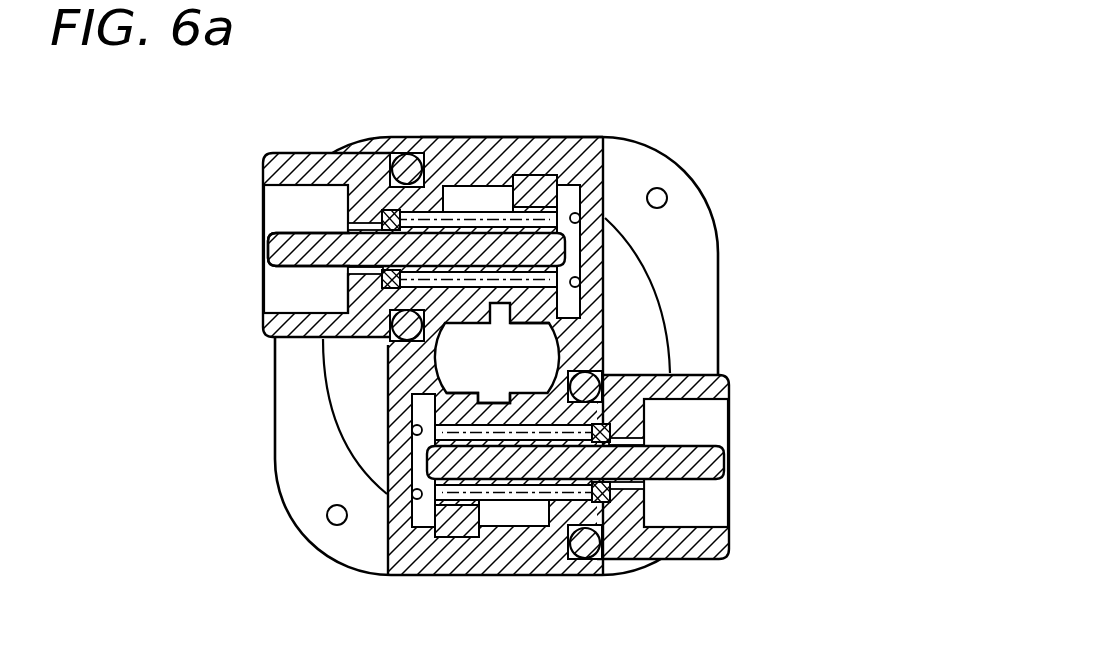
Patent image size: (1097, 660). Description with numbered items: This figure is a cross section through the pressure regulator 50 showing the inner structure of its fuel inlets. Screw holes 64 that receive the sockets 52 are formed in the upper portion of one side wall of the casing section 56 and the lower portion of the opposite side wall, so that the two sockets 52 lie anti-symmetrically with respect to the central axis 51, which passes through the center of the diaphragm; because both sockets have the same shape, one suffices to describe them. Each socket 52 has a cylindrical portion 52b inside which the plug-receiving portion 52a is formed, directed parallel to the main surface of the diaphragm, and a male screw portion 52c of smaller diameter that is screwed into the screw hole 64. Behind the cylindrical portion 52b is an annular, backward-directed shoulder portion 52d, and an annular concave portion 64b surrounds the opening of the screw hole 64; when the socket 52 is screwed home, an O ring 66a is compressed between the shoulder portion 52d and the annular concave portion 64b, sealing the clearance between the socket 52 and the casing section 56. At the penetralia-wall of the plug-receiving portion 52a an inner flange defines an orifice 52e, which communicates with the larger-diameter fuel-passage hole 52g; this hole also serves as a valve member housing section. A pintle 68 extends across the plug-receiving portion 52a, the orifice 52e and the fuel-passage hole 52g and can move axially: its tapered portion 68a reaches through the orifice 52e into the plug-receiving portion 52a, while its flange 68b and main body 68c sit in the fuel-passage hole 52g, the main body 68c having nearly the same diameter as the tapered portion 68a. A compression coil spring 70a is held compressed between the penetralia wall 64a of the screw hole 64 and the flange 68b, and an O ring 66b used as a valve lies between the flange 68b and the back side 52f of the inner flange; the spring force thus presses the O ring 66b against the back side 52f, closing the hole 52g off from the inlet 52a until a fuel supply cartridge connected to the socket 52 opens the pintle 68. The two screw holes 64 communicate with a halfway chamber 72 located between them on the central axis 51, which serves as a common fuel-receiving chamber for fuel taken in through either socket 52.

The pressure regulator 50 is at (703, 152).
The central axis 51 is at (498, 357).
The socket 52 is at (322, 150).
The plug-receiving portion 52a is at (295, 184).
The cylindrical portion 52b is at (266, 340).
The male screw portion 52c is at (523, 137).
The shoulder portion 52d is at (435, 349).
The orifice 52e is at (350, 268).
The back side of the inner flange 52f is at (350, 227).
The fuel-passage hole 52g is at (580, 249).
The casing section 56 is at (553, 133).
The screw hole 64 is at (485, 137).
The penetralia wall 64a is at (570, 358).
The annular concave portion 64b is at (422, 137).
The O ring 66a is at (405, 137).
The O ring 66b is at (305, 183).
The pintle 68 is at (603, 182).
The tapered portion 68a is at (280, 246).
The flange 68b is at (400, 292).
The main body 68c is at (528, 228).
The compression coil spring 70a is at (565, 323).
The halfway chamber 72 is at (462, 370).